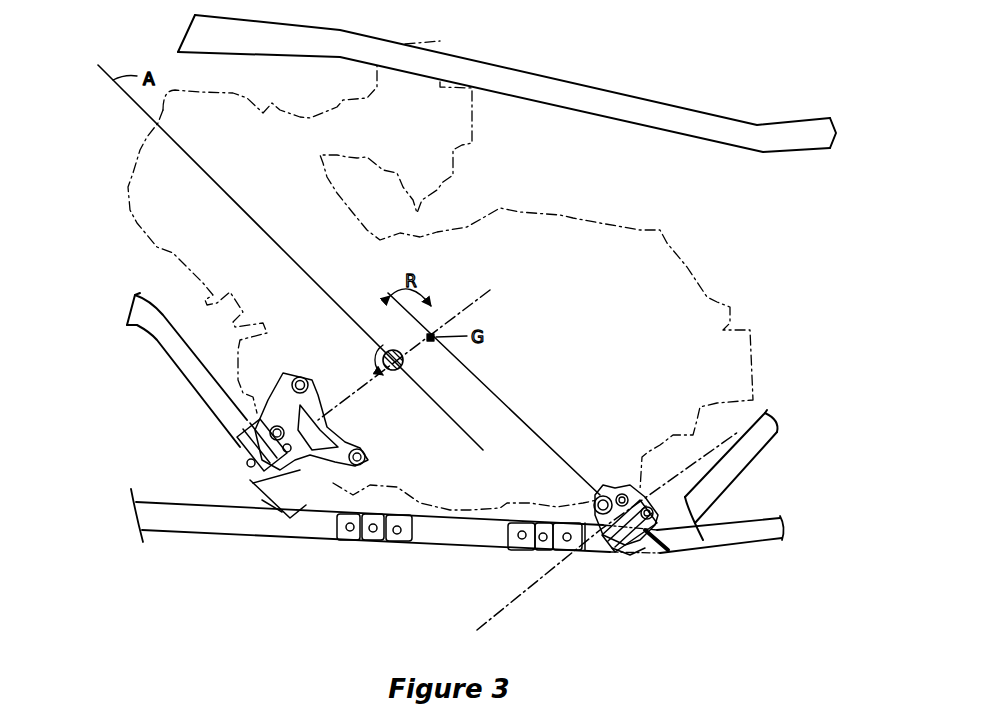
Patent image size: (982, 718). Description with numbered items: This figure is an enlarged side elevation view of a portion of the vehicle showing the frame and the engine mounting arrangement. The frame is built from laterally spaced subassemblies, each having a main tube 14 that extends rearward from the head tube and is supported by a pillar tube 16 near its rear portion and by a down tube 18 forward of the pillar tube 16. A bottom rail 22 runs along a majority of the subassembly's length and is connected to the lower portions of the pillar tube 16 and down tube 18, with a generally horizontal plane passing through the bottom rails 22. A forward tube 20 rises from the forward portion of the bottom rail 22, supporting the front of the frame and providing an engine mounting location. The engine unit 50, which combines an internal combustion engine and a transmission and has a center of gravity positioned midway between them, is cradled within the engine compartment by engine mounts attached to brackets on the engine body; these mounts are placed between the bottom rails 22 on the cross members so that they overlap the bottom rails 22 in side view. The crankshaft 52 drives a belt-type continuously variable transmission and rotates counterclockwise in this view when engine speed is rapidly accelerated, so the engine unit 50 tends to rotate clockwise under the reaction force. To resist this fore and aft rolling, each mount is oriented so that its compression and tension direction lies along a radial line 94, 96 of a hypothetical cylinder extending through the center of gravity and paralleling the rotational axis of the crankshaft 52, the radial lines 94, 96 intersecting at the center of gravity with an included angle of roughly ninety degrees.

The main tube 14 is at (525, 80).
The pillar tube 16 is at (762, 537).
The down tube 18 is at (750, 450).
The forward tube 20 is at (163, 340).
The bottom rail 22 is at (432, 537).
The engine unit 50 is at (163, 250).
The crankshaft 52 is at (404, 360).
The radial line 94 is at (472, 303).
The radial line 96 is at (400, 313).